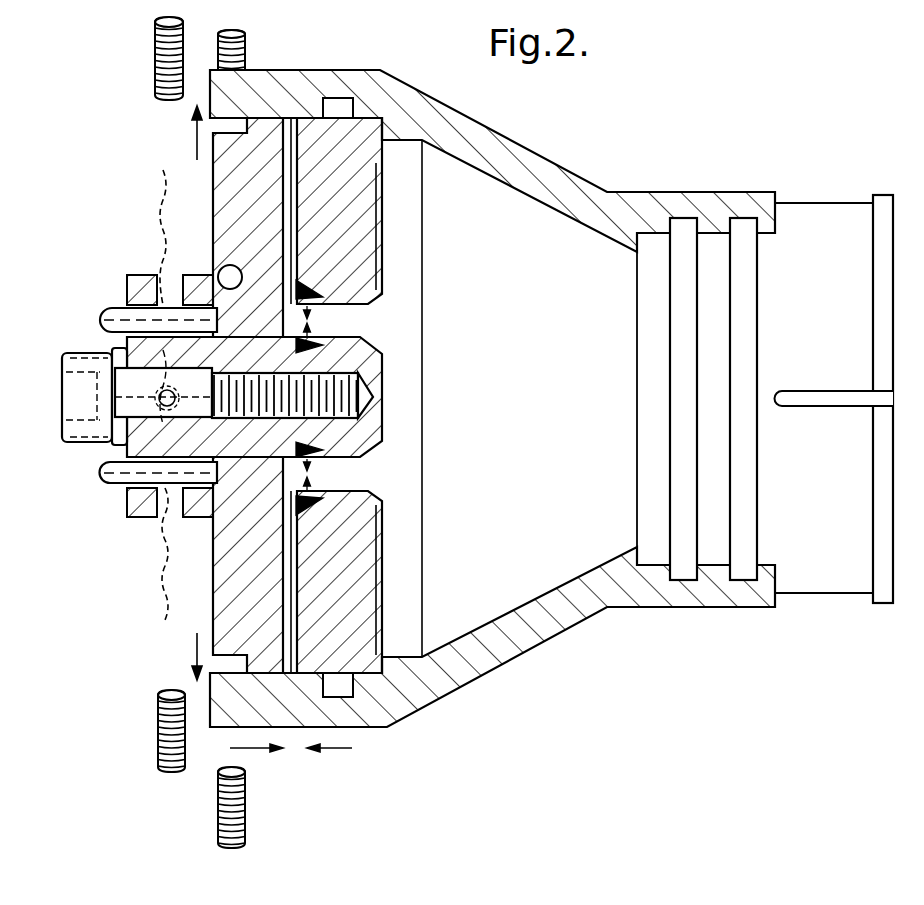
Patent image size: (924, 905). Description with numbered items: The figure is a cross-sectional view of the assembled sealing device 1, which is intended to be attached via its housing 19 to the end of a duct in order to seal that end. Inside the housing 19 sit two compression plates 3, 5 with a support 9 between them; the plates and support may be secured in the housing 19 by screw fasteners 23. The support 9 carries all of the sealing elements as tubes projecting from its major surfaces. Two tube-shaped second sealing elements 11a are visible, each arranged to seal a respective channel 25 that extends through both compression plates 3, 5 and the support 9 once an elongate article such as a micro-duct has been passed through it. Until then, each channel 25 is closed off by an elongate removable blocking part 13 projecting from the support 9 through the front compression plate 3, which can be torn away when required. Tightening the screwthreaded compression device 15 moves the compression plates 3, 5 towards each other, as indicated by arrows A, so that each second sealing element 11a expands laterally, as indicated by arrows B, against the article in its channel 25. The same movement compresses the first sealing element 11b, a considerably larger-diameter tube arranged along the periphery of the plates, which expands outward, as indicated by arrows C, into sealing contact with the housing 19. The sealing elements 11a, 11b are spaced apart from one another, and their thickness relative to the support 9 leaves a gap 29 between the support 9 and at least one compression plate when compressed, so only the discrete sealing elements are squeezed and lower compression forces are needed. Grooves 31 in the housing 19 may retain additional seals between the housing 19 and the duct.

The sealing device 1 is at (122, 191).
The compression plate 3 is at (238, 588).
The compression plate 5 is at (345, 625).
The support 9 is at (290, 186).
The second sealing element 11a is at (313, 292).
The first sealing element 11b is at (290, 128).
The blocking part 13 is at (103, 483).
The screwthreaded compression device 15 is at (72, 356).
The housing 19 is at (525, 158).
The screw fastener 23 is at (238, 815).
The channel 25 is at (375, 322).
The gap 29 is at (300, 583).
The groove 31 is at (684, 230).